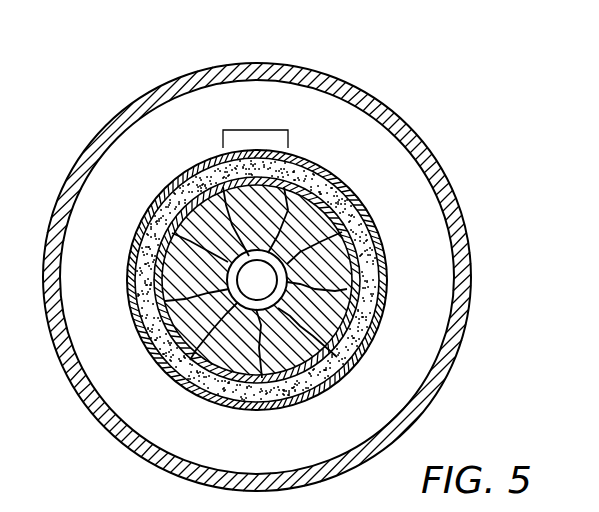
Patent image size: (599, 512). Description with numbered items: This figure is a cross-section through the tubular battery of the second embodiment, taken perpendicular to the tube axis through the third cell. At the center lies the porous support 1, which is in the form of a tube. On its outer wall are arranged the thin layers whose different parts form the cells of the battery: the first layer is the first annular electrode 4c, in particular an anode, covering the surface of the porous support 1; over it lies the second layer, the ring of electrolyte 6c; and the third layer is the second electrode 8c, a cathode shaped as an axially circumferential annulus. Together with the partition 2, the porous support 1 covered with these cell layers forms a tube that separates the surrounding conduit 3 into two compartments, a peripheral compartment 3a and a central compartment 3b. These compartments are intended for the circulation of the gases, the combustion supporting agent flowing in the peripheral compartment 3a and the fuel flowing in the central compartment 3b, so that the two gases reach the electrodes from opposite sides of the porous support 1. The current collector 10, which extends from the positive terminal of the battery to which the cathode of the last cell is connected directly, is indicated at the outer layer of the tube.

The porous support 1 is at (190, 207).
The partition 2 is at (246, 305).
The conduit 3 is at (428, 160).
The peripheral compartment 3a is at (422, 207).
The central compartment 3b is at (243, 289).
The first annular electrode 4c is at (152, 273).
The ring of electrolyte 6c is at (362, 273).
The second electrode 8c is at (330, 177).
The current collector 10 is at (251, 130).